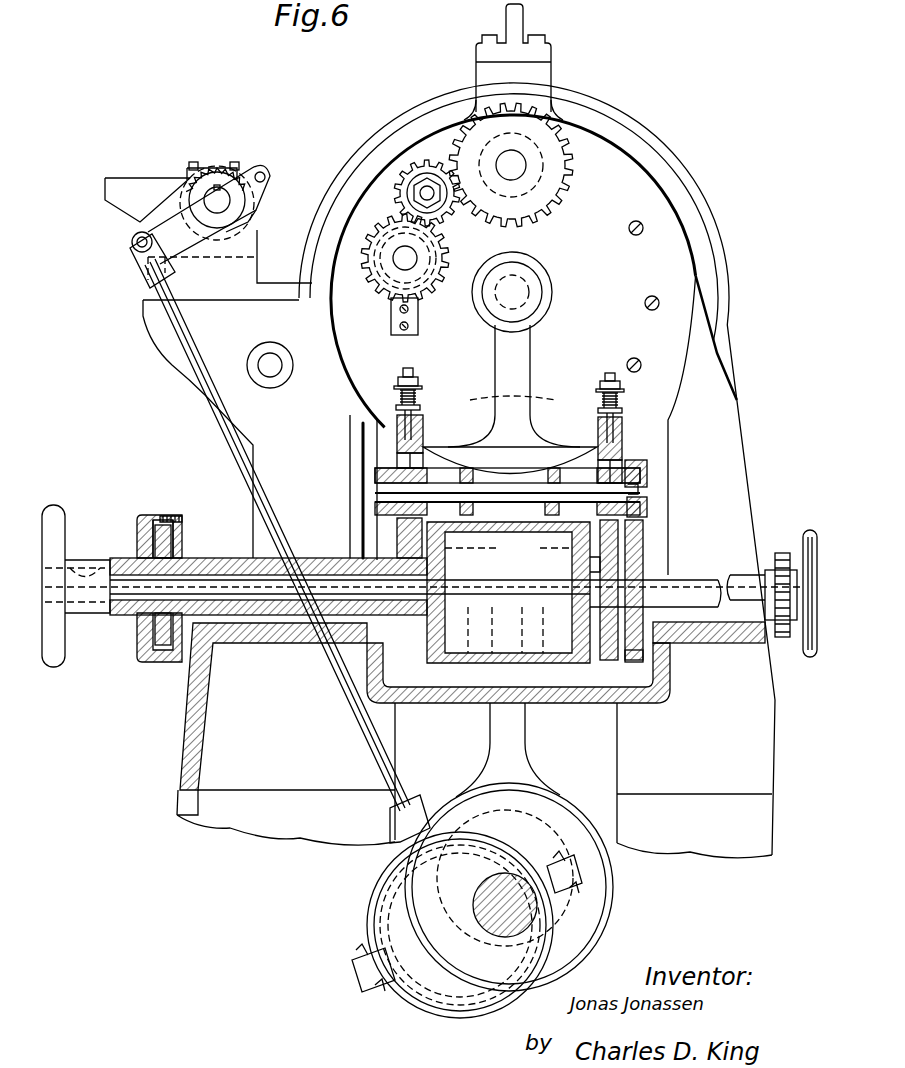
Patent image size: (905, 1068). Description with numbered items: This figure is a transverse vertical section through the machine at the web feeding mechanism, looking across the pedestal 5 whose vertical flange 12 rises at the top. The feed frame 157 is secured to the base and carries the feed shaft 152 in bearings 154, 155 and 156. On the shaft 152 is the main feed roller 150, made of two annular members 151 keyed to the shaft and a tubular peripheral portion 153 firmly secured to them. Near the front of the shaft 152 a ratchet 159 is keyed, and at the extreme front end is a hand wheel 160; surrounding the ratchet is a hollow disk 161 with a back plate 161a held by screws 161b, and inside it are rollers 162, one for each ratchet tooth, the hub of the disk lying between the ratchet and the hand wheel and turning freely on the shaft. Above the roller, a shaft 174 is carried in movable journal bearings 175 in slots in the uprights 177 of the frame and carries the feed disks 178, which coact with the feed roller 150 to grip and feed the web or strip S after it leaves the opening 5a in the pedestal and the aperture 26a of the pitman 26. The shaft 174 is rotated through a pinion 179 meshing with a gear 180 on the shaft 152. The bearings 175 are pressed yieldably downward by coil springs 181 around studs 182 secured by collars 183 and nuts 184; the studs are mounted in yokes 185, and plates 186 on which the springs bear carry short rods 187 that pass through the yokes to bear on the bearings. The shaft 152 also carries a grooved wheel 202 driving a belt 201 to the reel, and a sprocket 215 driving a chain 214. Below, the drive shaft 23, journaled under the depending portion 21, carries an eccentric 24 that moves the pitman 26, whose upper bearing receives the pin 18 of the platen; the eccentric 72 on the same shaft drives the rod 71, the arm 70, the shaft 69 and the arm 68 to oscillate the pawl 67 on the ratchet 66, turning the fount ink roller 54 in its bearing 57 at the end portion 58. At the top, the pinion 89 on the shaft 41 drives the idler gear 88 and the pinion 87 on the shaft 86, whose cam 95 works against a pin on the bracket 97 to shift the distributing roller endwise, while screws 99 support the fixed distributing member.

The pedestal 5 is at (738, 466).
The opening 5a is at (500, 524).
The vertical flange 12 is at (519, 18).
The shaft or pin 18 is at (528, 283).
The depending portion 21 is at (617, 779).
The drive shaft 23 is at (490, 930).
The eccentric 24 is at (440, 903).
The pitman or connecting member 26 is at (535, 345).
The aperture 26a is at (550, 447).
The shaft 41 is at (525, 160).
The ink roller 54 is at (216, 165).
The bearing 57 is at (192, 163).
The end portion 58 is at (120, 187).
The ratchet 66 is at (238, 163).
The pawl 67 is at (258, 206).
The arm 68 is at (268, 175).
The shaft 69 is at (222, 206).
The arm 70 is at (138, 233).
The rod 71 is at (214, 400).
The eccentric 72 is at (425, 893).
The shaft 86 is at (403, 265).
The pinion 87 is at (432, 300).
The idler gear 88 is at (410, 175).
The pinion 89 is at (475, 130).
The cam 95 is at (382, 280).
The bracket 97 is at (405, 336).
The screws 99 is at (633, 358).
The main feed roller 150 is at (482, 602).
The annular member 151 is at (572, 562).
The shaft 152 is at (212, 648).
The tubular peripheral portion 153 is at (552, 665).
The bearing 154 is at (200, 558).
The bearing 155 is at (400, 562).
The bearing 156 is at (602, 566).
The frame 157 is at (660, 703).
The ratchet 159 is at (140, 532).
The hand wheel 160 is at (55, 505).
The hollow disk 161 is at (150, 515).
The back plate 161a is at (172, 525).
The screws 161b is at (172, 515).
The rollers 162 is at (165, 657).
The shaft 174 is at (645, 505).
The journal bearing 175 is at (400, 460).
The upright 177 is at (400, 528).
The feed disk 178 is at (470, 470).
The pinion 179 is at (645, 472).
The gear 180 is at (645, 656).
The coil spring 181 is at (420, 396).
The stud 182 is at (412, 370).
The collar 183 is at (419, 382).
The nut 184 is at (398, 382).
The yoke 185 is at (420, 409).
The plate 186 is at (397, 420).
The short rod 187 is at (397, 442).
The belt 201 is at (810, 658).
The grooved wheel 202 is at (810, 530).
The chain 214 is at (784, 640).
The sprocket 215 is at (780, 555).
The web or strip S is at (508, 547).